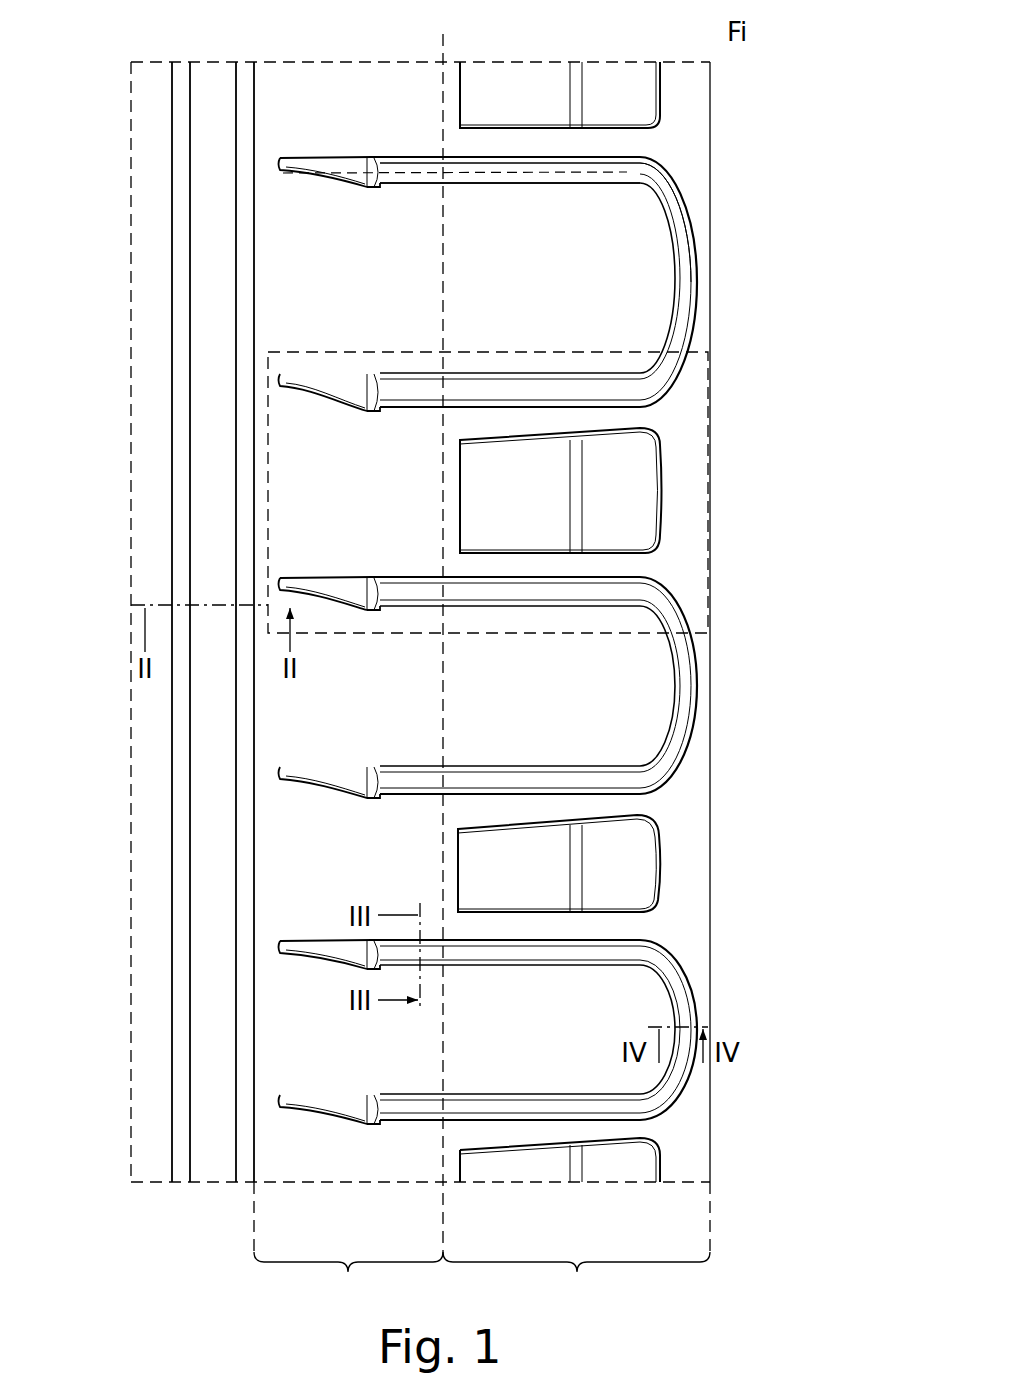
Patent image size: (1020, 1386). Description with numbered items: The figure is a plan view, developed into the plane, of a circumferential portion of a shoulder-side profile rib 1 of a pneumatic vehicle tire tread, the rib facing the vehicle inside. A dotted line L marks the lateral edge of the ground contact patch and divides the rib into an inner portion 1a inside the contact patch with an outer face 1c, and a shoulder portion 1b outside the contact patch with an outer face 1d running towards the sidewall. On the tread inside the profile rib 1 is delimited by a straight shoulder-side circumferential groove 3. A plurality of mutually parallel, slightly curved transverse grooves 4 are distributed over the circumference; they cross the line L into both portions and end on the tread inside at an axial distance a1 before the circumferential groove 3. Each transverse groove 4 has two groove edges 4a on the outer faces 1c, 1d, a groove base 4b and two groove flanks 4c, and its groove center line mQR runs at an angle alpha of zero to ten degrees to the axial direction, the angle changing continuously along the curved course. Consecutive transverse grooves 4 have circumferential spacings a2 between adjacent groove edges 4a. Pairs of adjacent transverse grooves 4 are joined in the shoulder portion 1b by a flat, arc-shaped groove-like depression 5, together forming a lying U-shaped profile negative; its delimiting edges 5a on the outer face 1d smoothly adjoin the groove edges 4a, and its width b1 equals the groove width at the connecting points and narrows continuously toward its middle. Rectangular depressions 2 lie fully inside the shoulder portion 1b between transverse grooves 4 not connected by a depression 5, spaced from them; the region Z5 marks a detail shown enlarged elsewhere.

The shoulder-side profile rib 1 is at (372, 84).
The inner portion 1a is at (348, 1279).
The shoulder portion 1b is at (576, 1285).
The outer face 1c is at (287, 1142).
The outer face 1d is at (597, 1130).
The depressions 2 is at (616, 468).
The shoulder-side circumferential groove 3 is at (230, 84).
The transverse grooves 4 is at (579, 152).
The groove edges 4a is at (505, 170).
The groove base 4b is at (508, 156).
The groove flanks 4c is at (565, 146).
The groove-like depression 5 is at (678, 212).
The delimiting edges 5a is at (697, 248).
The distance a1 is at (279, 163).
The spacings a2 is at (485, 186).
The width b1 is at (648, 298).
The angle alpha is at (407, 143).
The groove center line mQR is at (612, 172).
The detail Z5 is at (708, 380).
The line L is at (442, 630).